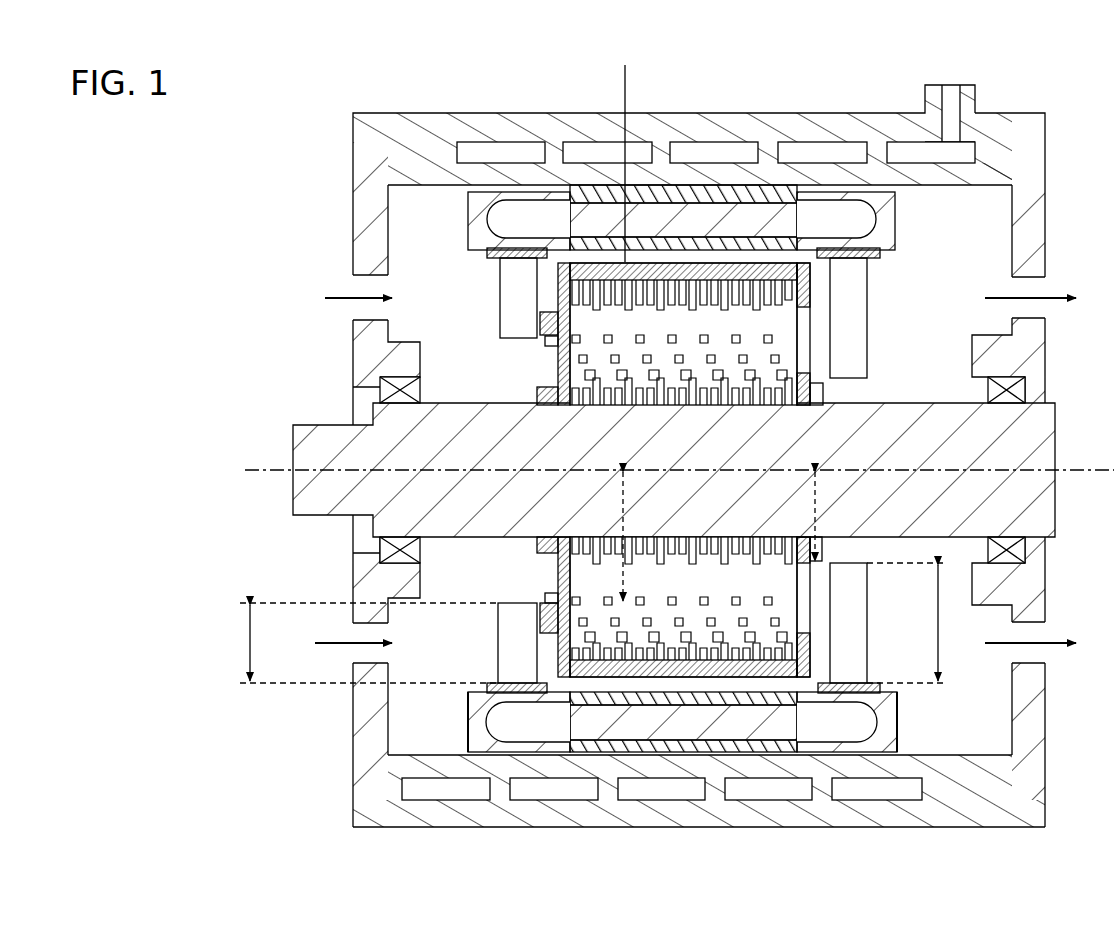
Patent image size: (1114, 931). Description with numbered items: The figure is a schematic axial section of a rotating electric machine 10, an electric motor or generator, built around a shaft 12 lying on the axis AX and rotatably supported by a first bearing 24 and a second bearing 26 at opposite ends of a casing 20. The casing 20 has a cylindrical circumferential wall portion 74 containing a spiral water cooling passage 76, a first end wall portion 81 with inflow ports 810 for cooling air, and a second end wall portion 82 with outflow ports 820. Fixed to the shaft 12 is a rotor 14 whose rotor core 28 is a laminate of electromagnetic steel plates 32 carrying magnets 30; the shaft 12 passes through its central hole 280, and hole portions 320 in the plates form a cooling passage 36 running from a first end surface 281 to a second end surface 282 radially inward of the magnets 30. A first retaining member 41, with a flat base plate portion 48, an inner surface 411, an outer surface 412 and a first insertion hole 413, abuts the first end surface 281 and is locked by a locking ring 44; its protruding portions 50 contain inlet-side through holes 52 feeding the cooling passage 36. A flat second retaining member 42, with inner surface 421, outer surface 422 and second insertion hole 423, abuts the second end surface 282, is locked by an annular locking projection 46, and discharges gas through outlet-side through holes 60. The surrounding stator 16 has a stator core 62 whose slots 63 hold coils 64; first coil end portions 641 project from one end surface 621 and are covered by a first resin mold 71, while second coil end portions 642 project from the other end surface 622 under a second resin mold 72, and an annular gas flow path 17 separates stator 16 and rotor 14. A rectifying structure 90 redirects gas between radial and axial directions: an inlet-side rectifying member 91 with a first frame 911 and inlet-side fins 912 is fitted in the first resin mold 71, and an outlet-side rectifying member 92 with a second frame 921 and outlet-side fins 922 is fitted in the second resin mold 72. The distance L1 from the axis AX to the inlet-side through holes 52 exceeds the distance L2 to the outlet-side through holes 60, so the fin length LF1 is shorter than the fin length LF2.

The rotating electric machine 10 is at (150, 154).
The shaft 12 is at (1040, 440).
The rotor 14 is at (688, 464).
The stator 16 is at (681, 395).
The gas flow path 17 is at (628, 150).
The casing 20 is at (699, 450).
The first bearing 24 is at (412, 551).
The second bearing 26 is at (1020, 551).
The rotor core 28 is at (678, 406).
The magnets 30 is at (662, 710).
The electromagnetic steel plates 32 is at (802, 655).
The cooling passage 36 is at (753, 597).
The first retaining member 41 is at (552, 275).
The second retaining member 42 is at (815, 272).
The locking ring 44 is at (536, 394).
The annular locking projection 46 is at (818, 406).
The base plate portion 48 is at (556, 290).
The protruding portion 50 is at (545, 342).
The inlet-side through hole 52 is at (552, 325).
The outlet-side through hole 60 is at (803, 322).
The stator core 62 is at (681, 154).
The slots 63 is at (688, 215).
The coils 64 is at (677, 745).
The first resin mold 71 is at (480, 710).
The second resin mold 72 is at (882, 712).
The circumferential wall portion 74 is at (474, 133).
The water cooling passage 76 is at (705, 150).
The first end wall portion 81 is at (375, 220).
The second end wall portion 82 is at (1027, 182).
The rectifying structure 90 is at (664, 492).
The inlet-side rectifying member 91 is at (494, 623).
The outlet-side rectifying member 92 is at (857, 558).
The central hole 280 is at (740, 407).
The first end surface 281 is at (560, 300).
The second end surface 282 is at (811, 290).
The hole portions 320 is at (782, 343).
The inner surface 411 is at (556, 358).
The outer surface 412 is at (557, 378).
The first insertion hole 413 is at (561, 407).
The inner surface 421 is at (790, 388).
The outer surface 422 is at (812, 378).
The second insertion hole 423 is at (812, 400).
The one end surface 621 is at (568, 190).
The other end surface 622 is at (798, 192).
The first coil end portions 641 is at (500, 720).
The second coil end portions 642 is at (883, 720).
The inflow ports 810 is at (367, 287).
The outflow ports 820 is at (1033, 286).
The first frame 911 is at (521, 694).
The inlet-side fins 912 is at (510, 284).
The second frame 921 is at (842, 704).
The outlet-side fins 922 is at (857, 369).
The axis AX is at (662, 470).
The shortest distance L1 is at (607, 536).
The shortest distance L2 is at (800, 516).
The length LF1 is at (354, 643).
The length LF2 is at (923, 623).